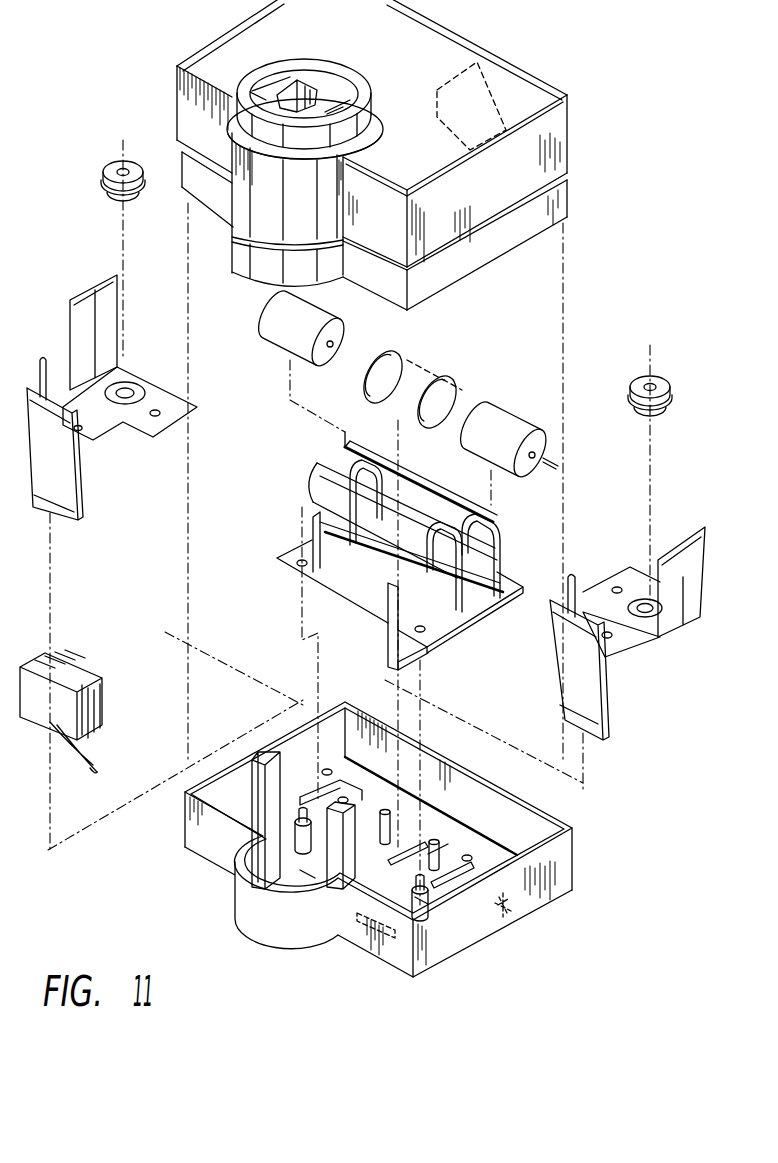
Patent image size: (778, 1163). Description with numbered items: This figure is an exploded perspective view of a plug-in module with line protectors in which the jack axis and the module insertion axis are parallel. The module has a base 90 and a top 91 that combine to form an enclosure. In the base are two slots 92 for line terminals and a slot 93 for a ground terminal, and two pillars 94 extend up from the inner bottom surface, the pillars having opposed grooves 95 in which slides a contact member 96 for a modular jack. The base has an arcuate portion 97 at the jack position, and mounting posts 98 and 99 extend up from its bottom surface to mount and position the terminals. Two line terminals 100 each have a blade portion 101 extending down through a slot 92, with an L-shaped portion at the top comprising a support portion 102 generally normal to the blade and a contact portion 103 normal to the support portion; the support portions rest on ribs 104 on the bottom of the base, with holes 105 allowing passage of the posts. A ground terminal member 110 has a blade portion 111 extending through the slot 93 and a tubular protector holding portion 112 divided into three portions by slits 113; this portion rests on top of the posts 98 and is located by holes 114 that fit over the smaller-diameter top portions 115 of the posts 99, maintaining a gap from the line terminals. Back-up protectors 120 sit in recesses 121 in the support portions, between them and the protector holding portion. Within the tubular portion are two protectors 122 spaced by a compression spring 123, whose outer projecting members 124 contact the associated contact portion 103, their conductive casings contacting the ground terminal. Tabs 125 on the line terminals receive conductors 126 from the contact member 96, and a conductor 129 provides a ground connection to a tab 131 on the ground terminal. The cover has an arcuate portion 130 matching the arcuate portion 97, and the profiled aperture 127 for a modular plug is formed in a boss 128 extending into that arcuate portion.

The base 90 is at (567, 827).
The top 91 is at (550, 137).
The slots for line terminals 92 is at (305, 915).
The slot for ground terminal 93 is at (432, 850).
The pillars 94 is at (262, 778).
The grooves 95 is at (292, 800).
The contact member 96 is at (47, 715).
The arcuate portion 97 is at (307, 930).
The mounting posts 98 is at (367, 813).
The mounting posts 99 is at (312, 873).
The line terminals 100 is at (105, 442).
The blade portion 101 is at (78, 512).
The support portion 102 is at (158, 400).
The contact portion 103 is at (87, 353).
The ribs 104 is at (327, 770).
The holes 105 is at (160, 413).
The ground terminal member 110 is at (360, 573).
The blade portion 111 is at (388, 648).
The tubular protector holding portion 112 is at (387, 560).
The slits 113 is at (390, 457).
The holes 114 is at (302, 565).
The top portions of posts 115 is at (297, 837).
The back-up protectors 120 is at (104, 190).
The recesses 121 is at (125, 393).
The protectors 122 is at (330, 322).
The compression spring 123 is at (458, 388).
The projecting members 124 is at (258, 313).
The tabs 125 is at (40, 378).
The conductors 126 is at (93, 763).
The profiled aperture 127 is at (297, 83).
The boss 128 is at (247, 107).
The conductor 129 is at (90, 773).
The arcuate portion 130 is at (263, 223).
The tab 131 is at (312, 533).